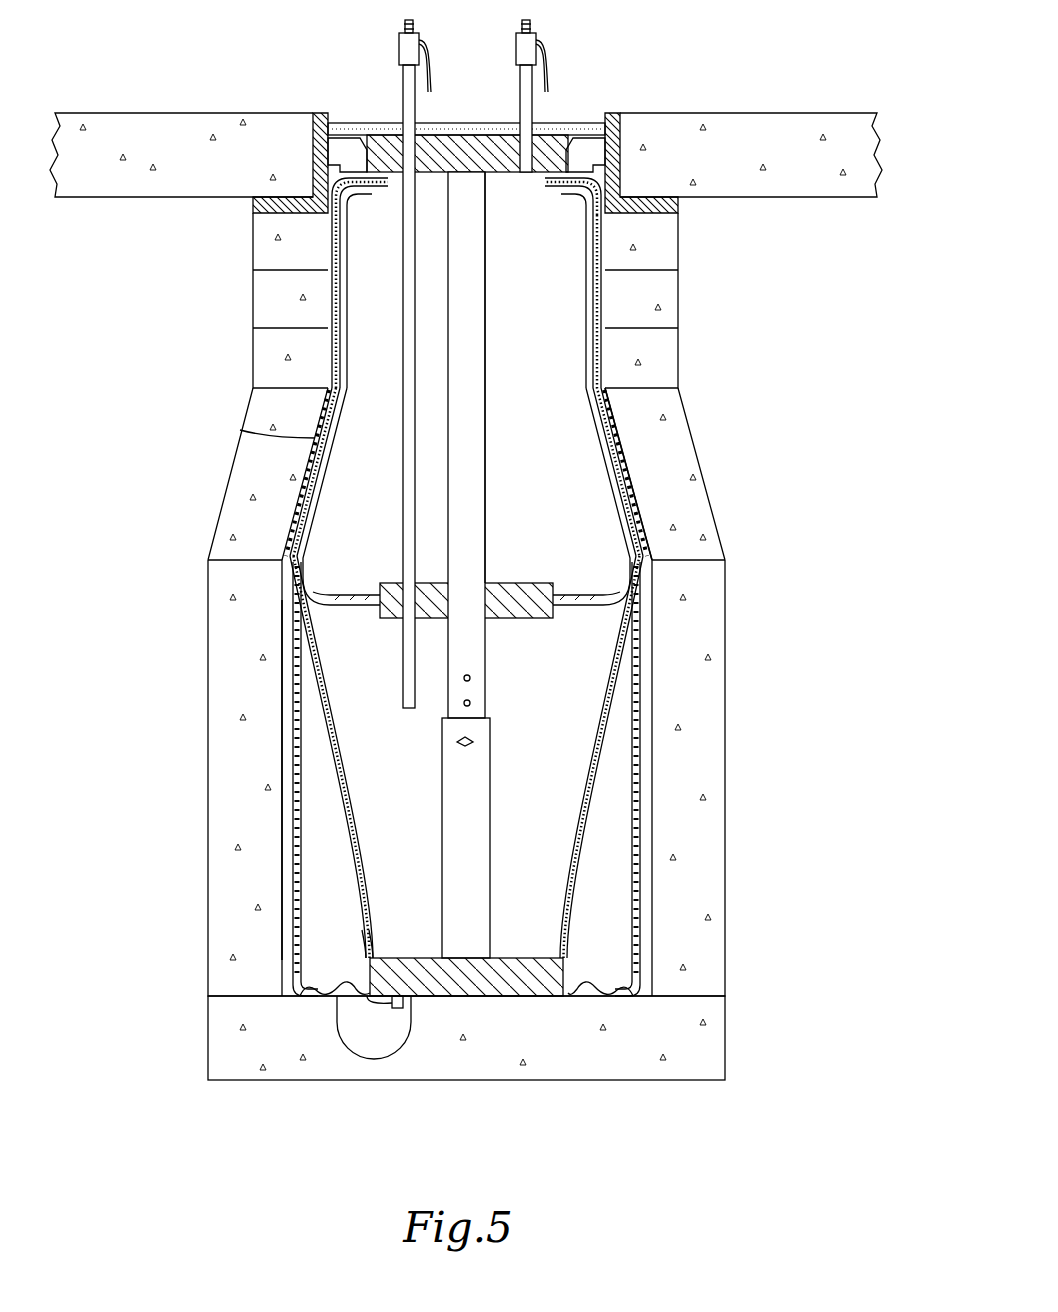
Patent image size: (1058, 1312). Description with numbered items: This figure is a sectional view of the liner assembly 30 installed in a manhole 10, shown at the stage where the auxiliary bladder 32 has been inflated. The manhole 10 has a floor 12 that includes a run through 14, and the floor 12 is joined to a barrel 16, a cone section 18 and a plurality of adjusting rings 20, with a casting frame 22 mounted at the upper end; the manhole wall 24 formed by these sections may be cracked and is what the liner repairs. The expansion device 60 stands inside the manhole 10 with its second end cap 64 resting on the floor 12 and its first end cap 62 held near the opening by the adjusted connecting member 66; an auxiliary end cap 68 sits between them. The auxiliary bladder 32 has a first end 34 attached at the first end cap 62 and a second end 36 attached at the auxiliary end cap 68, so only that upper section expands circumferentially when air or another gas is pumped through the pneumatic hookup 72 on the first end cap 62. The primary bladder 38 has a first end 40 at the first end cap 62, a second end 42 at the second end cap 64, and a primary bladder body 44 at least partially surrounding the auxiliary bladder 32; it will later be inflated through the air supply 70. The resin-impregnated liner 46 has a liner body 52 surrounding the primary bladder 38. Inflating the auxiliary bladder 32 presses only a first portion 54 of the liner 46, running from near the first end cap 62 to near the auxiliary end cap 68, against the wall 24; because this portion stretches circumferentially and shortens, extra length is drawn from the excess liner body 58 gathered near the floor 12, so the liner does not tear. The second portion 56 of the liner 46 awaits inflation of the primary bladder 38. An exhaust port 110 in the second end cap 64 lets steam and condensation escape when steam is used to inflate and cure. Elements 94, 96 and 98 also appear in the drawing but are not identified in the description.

The manhole 10 is at (704, 50).
The floor 12 is at (717, 1043).
The run through 14 is at (372, 1045).
The barrel 16 is at (720, 726).
The cone section 18 is at (700, 505).
The adjusting rings 20 is at (660, 356).
The casting frame 22 is at (612, 118).
The manhole wall 24 is at (284, 868).
The liner assembly 30 is at (437, 116).
The auxiliary bladder 32 is at (586, 381).
The first end of the auxiliary bladder 34 is at (542, 190).
The second end of the auxiliary bladder 36 is at (568, 605).
The primary bladder 38 is at (581, 783).
The first end of the primary bladder 40 is at (392, 192).
The second end of the primary bladder 42 is at (375, 958).
The primary bladder body 44 is at (313, 688).
The liner 46 is at (300, 800).
The liner body 52 is at (632, 938).
The first portion of the liner 54 is at (620, 440).
The second portion of the liner 56 is at (301, 912).
The excess liner body 58 is at (578, 988).
The expansion device 60 is at (493, 441).
The first end cap 62 is at (390, 133).
The second end cap 64 is at (500, 968).
The connecting member 66 is at (486, 303).
The auxiliary end cap 68 is at (490, 592).
The air supply 70 is at (403, 512).
The pneumatic hookup 72 is at (399, 52).
The holes 94 is at (471, 703).
The flow marker 96 is at (474, 742).
The lower tube 98 is at (455, 835).
The exhaust port 110 is at (364, 988).